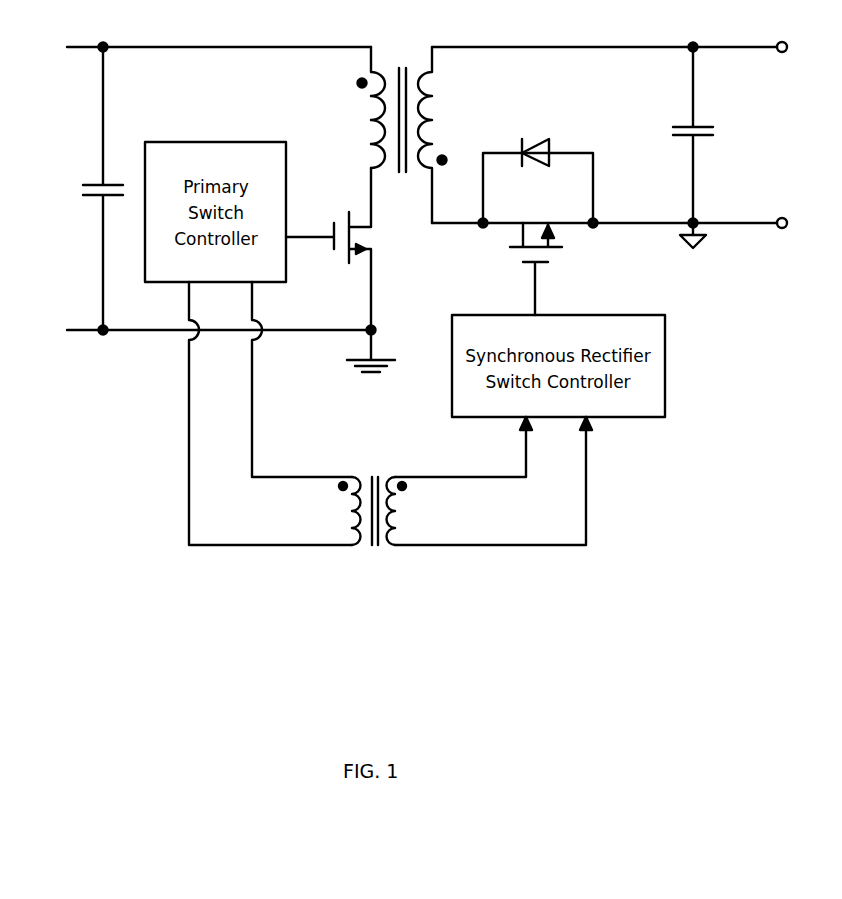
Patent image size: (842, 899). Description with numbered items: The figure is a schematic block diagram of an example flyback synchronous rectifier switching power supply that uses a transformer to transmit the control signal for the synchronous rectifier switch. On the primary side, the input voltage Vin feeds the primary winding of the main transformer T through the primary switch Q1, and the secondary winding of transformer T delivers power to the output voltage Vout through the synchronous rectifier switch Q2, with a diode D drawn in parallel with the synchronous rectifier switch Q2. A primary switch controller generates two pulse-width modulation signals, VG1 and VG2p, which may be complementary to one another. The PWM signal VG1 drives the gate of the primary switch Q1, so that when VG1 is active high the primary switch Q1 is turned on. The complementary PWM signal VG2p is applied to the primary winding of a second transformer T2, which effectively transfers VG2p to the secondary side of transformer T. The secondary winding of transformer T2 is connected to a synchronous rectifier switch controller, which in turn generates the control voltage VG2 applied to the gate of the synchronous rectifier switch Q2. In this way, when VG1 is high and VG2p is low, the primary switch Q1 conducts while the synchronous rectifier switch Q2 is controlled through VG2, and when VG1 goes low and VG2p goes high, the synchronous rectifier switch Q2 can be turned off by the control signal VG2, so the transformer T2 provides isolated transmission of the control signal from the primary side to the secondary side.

The transformer T is at (402, 120).
The transformer T2 is at (465, 481).
The diode D is at (538, 169).
The primary switch Q1 is at (342, 270).
The synchronous rectifier switch Q2 is at (536, 258).
The input voltage Vin is at (194, 189).
The output voltage Vout is at (618, 145).
The PWM control signal VG1 is at (310, 220).
The control voltage VG2 is at (559, 290).
The PWM control signal VG2p is at (305, 509).